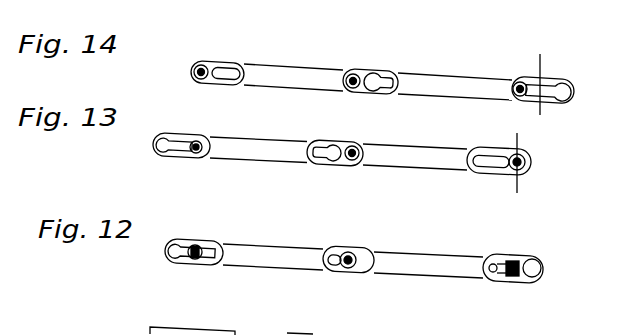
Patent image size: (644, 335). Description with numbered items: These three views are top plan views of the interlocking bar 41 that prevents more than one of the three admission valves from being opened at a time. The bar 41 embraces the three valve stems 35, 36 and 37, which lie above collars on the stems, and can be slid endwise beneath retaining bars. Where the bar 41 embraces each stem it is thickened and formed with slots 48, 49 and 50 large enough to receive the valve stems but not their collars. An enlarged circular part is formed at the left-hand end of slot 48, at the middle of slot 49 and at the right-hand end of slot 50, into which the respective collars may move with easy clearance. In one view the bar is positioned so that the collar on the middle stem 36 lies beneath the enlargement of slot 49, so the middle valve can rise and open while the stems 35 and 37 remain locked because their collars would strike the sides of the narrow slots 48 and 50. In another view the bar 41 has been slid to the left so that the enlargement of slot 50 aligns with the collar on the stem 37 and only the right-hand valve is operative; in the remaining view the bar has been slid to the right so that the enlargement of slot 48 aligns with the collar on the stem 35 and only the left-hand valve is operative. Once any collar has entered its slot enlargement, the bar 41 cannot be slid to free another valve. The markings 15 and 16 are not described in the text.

In FIG. 14, the axis line 15 is at (546, 85).
In FIG. 13, the pivot pin 16 is at (521, 166).
In FIG. 12, the pivot pin 16 is at (532, 268).
In FIG. 14, the valve stem 35 is at (207, 66).
In FIG. 13, the valve stem 35 is at (201, 142).
In FIG. 12, the valve stem 35 is at (197, 245).
In FIG. 14, the valve stem 36 is at (355, 74).
In FIG. 13, the valve stem 36 is at (354, 164).
In FIG. 12, the valve stem 36 is at (351, 251).
In FIG. 14, the valve stem 37 is at (514, 101).
In FIG. 13, the valve stem 37 is at (512, 154).
In FIG. 12, the valve stem 37 is at (512, 268).
In FIG. 14, the bar 41 is at (457, 84).
In FIG. 13, the bar 41 is at (430, 150).
In FIG. 12, the bar 41 is at (450, 269).
In FIG. 14, the slot 48 is at (216, 58).
In FIG. 13, the slot 48 is at (182, 143).
In FIG. 12, the slot 48 is at (221, 250).
In FIG. 14, the slot 49 is at (381, 90).
In FIG. 13, the slot 49 is at (338, 146).
In FIG. 12, the slot 49 is at (331, 256).
In FIG. 14, the slot 50 is at (572, 86).
In FIG. 13, the slot 50 is at (492, 165).
In FIG. 12, the slot 50 is at (496, 264).